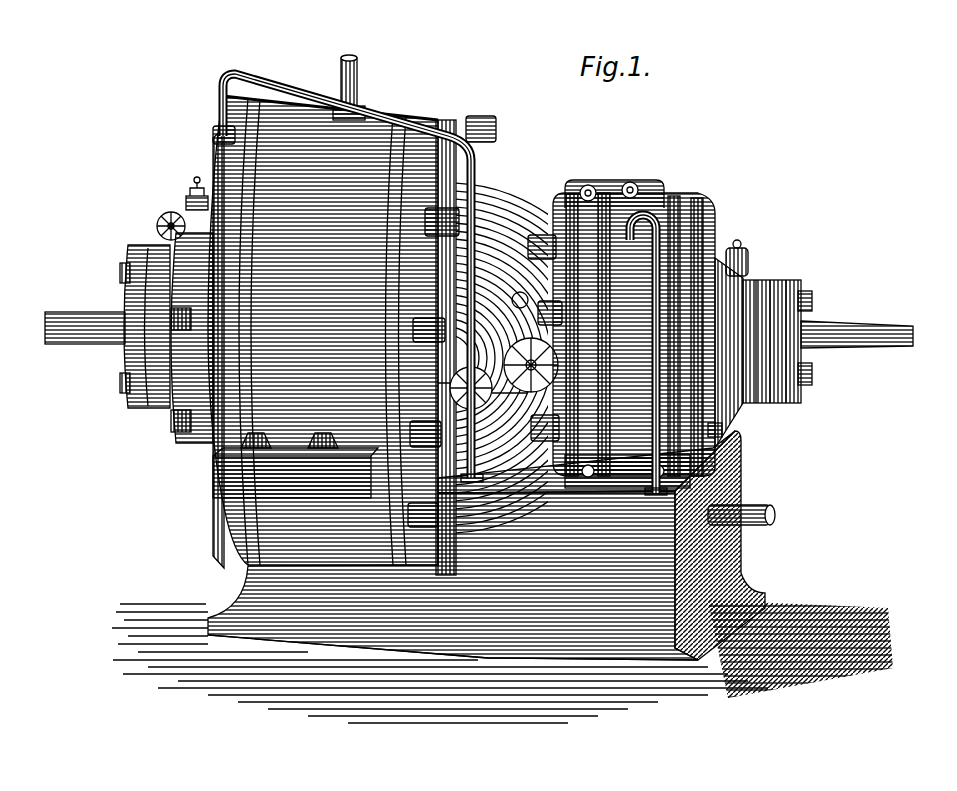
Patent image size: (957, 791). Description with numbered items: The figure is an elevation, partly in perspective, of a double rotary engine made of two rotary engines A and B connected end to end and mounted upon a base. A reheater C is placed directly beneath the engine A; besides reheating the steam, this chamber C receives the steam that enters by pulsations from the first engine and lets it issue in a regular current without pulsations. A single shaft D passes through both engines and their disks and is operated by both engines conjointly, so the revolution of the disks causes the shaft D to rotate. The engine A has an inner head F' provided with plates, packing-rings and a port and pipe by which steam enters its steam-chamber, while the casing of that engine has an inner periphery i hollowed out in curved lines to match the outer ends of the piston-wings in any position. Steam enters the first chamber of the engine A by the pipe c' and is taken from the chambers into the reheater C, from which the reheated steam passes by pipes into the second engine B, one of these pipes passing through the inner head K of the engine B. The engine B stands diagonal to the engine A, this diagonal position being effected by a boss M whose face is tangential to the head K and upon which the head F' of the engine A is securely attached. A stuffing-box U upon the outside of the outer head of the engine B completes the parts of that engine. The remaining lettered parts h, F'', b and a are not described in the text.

The shaft D is at (476, 330).
The stuffing-box U is at (145, 326).
The inner head K is at (353, 345).
The rotary engine B is at (323, 310).
The boss M is at (530, 358).
The brush holder h is at (516, 293).
The inner head F' is at (590, 334).
The rotary engine A is at (634, 340).
The inner periphery of casing i is at (614, 229).
The ring F'' is at (684, 336).
The hub b is at (729, 344).
The flange a is at (777, 341).
The pipe c' is at (716, 421).
The reheater C is at (491, 545).